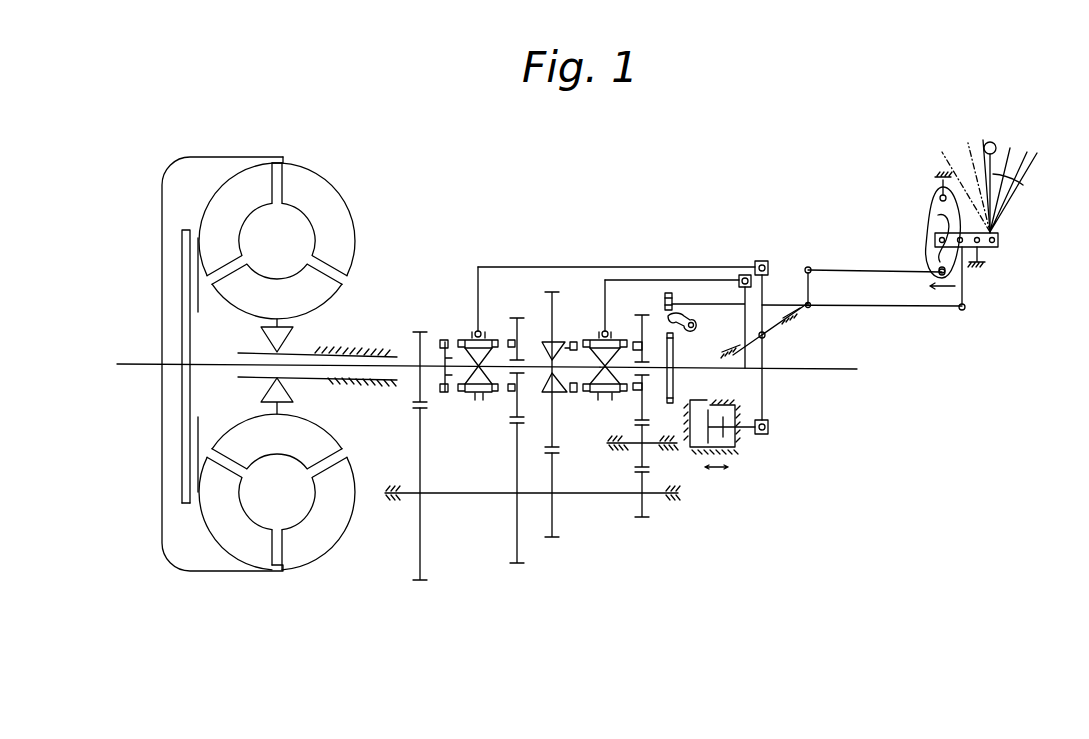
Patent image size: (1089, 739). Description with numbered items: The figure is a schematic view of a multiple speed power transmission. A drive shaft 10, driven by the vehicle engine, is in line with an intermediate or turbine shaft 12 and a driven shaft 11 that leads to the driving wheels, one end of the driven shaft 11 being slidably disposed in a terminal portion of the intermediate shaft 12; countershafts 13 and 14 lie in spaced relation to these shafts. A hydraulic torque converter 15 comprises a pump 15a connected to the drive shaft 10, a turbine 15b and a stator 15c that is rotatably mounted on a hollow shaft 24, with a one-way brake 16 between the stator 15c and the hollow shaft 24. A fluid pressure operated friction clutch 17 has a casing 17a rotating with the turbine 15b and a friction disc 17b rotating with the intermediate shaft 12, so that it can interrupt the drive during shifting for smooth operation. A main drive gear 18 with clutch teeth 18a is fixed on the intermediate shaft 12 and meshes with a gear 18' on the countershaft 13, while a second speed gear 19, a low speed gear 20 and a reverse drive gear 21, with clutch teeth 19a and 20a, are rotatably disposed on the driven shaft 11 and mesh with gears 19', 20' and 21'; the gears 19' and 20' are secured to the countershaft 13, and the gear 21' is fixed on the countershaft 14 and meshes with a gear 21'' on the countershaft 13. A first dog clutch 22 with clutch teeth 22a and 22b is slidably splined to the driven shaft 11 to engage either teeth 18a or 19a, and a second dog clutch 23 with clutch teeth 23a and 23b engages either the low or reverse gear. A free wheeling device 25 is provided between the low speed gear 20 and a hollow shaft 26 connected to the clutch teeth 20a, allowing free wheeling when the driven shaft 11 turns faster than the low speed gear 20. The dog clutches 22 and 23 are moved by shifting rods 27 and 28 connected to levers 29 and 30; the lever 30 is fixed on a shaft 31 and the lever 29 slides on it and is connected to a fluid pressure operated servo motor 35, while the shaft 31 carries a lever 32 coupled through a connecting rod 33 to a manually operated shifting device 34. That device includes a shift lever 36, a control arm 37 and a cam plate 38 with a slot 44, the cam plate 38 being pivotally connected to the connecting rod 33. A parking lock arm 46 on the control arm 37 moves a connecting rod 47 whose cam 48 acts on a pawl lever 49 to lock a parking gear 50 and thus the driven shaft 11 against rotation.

The drive shaft 10 is at (127, 363).
The driven shaft 11 is at (825, 368).
The intermediate shaft 12 is at (397, 356).
The countershaft 13 is at (457, 495).
The countershaft 14 is at (657, 447).
The hydraulic torque converter 15 is at (291, 233).
The pump 15a is at (332, 200).
The turbine 15b is at (217, 217).
The stator 15c is at (250, 293).
The one-way brake 16 is at (288, 330).
The fluid pressure operated friction clutch 17 is at (162, 302).
The casing 17a is at (182, 492).
The friction disc 17b is at (182, 440).
The main drive gear 18 is at (409, 345).
The clutch teeth 18a is at (445, 340).
The gear 18' is at (398, 494).
The second speed gear 19 is at (524, 346).
The clutch teeth 19a is at (511, 340).
The gear 19' is at (544, 502).
The low speed gear 20 is at (546, 339).
The clutch teeth 20a is at (574, 342).
The gear 20' is at (575, 495).
The reverse drive gear 21 is at (642, 355).
The gear 21' is at (661, 436).
The gear 21'' is at (673, 509).
The first dog clutch 22 is at (478, 330).
The clutch teeth 22a is at (462, 392).
The clutch teeth 22b is at (493, 392).
The second dog clutch 23 is at (605, 330).
The clutch teeth 23a is at (588, 393).
The clutch teeth 23b is at (612, 393).
The hollow shaft 24 is at (307, 380).
The free wheeling device 25 is at (560, 440).
The hollow shaft 26 is at (563, 343).
The shifting rod 27 is at (722, 267).
The shifting rod 28 is at (660, 280).
The lever 29 is at (766, 263).
The lever 30 is at (745, 330).
The shaft 31 is at (773, 330).
The lever 32 is at (812, 284).
The connecting rod 33 is at (873, 268).
The manually operated shifting device 34 is at (1013, 246).
The fluid pressure operated servo motor 35 is at (730, 455).
The shift lever 36 is at (1018, 185).
The control arm 37 is at (980, 262).
The cam plate 38 is at (927, 210).
The slot 44 is at (933, 192).
The parking lock arm 46 is at (963, 293).
The connecting rod 47 is at (897, 307).
The cam 48 is at (668, 293).
The pawl lever 49 is at (697, 320).
The parking gear 50 is at (673, 380).